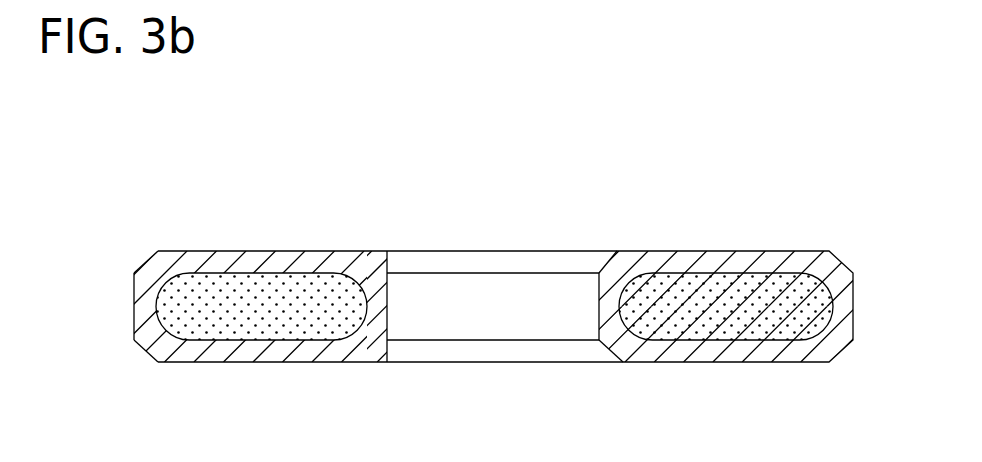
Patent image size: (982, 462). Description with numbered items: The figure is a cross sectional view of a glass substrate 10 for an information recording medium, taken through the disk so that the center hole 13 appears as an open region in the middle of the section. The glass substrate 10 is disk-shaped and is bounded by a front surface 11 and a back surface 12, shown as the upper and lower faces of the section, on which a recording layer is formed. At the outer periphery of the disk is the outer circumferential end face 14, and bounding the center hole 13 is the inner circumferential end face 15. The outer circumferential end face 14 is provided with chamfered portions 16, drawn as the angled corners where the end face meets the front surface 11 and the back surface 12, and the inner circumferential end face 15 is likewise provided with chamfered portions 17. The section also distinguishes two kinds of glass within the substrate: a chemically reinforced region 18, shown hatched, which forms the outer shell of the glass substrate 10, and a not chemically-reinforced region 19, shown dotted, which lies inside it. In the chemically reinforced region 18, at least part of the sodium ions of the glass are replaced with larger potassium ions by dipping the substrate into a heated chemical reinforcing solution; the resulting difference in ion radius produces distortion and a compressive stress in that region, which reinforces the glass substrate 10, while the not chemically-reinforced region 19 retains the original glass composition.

The glass substrate 10 is at (237, 195).
The front surface 11 is at (732, 255).
The back surface 12 is at (730, 362).
The center hole 13 is at (561, 283).
The outer circumferential end face 14 is at (133, 313).
The inner circumferential end face 15 is at (387, 307).
The chamfered portion 16 is at (142, 262).
The chamfered portion 17 is at (387, 252).
The chemically reinforced region 18 is at (318, 258).
The not chemically-reinforced region 19 is at (267, 323).